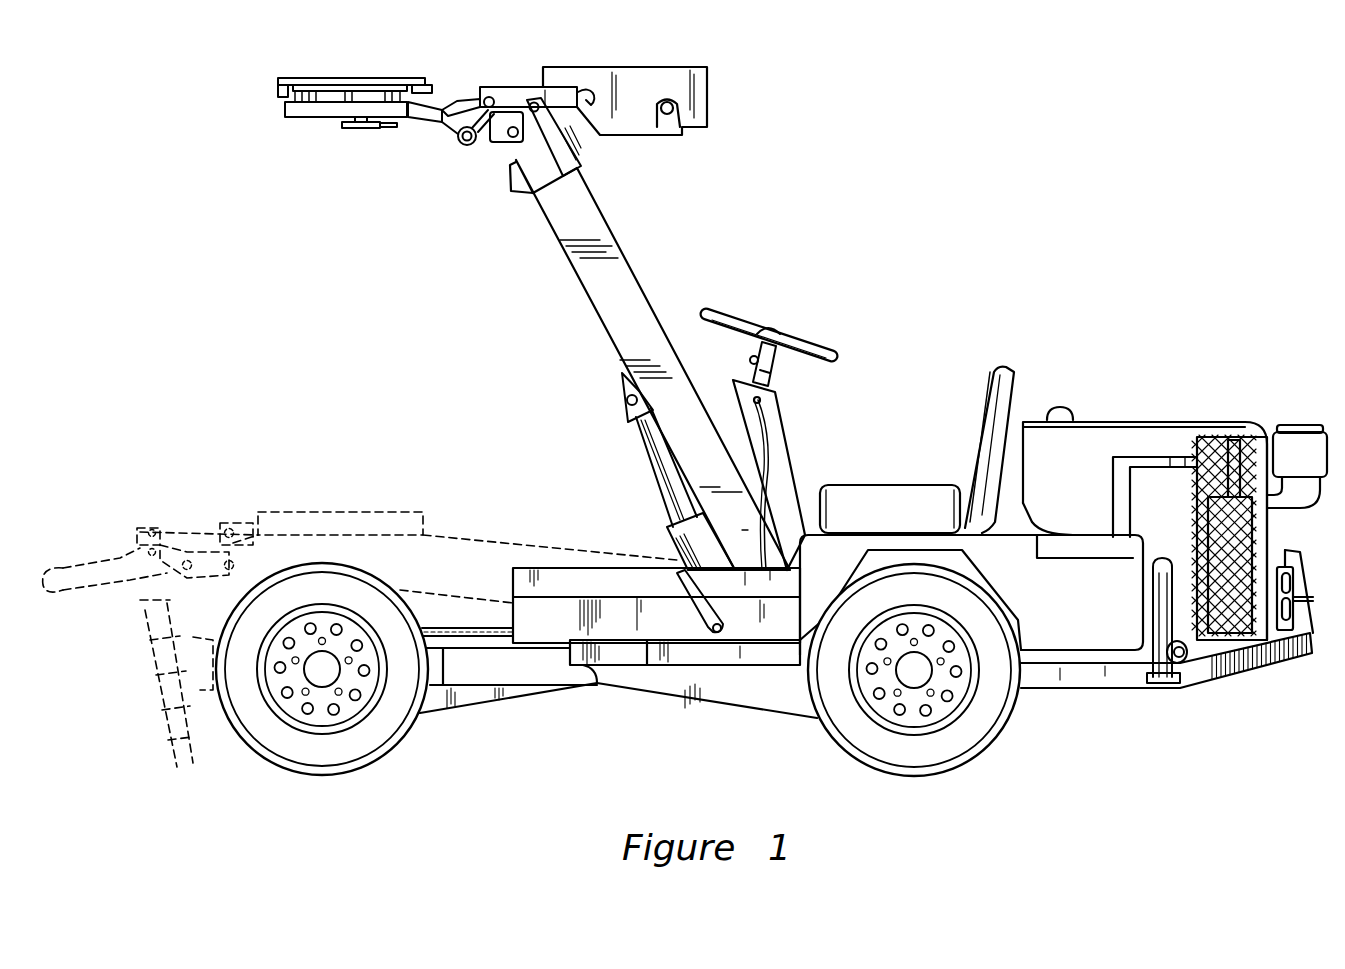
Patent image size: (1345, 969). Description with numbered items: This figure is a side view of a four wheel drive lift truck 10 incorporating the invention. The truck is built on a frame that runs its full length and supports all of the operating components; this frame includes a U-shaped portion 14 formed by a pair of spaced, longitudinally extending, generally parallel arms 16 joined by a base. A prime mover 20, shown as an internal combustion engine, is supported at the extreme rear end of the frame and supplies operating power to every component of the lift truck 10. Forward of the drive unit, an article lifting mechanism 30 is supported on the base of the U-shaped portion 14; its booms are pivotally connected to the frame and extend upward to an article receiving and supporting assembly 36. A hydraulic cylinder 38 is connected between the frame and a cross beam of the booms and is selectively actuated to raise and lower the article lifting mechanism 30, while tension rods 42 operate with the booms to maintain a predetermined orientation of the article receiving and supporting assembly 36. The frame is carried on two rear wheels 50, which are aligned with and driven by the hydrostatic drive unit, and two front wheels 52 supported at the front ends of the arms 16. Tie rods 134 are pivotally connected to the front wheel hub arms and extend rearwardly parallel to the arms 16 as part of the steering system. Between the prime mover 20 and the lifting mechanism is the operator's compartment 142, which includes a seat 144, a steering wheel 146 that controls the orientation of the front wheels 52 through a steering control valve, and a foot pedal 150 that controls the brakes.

The lift truck 10 is at (921, 308).
The U-shaped portion 14 is at (701, 710).
The arms 16 is at (461, 697).
The prime mover 20 is at (1174, 405).
The article lifting mechanism 30 is at (542, 280).
The article receiving and supporting assembly 36 is at (347, 60).
The hydraulic cylinder 38 is at (668, 543).
The tension rods 42 is at (568, 151).
The rear wheels 50 is at (958, 748).
The front wheels 52 is at (388, 755).
The tie rods 134 is at (446, 632).
The operator's compartment 142 is at (875, 383).
The seat 144 is at (921, 449).
The steering wheel 146 is at (809, 352).
The foot pedal 150 is at (700, 615).